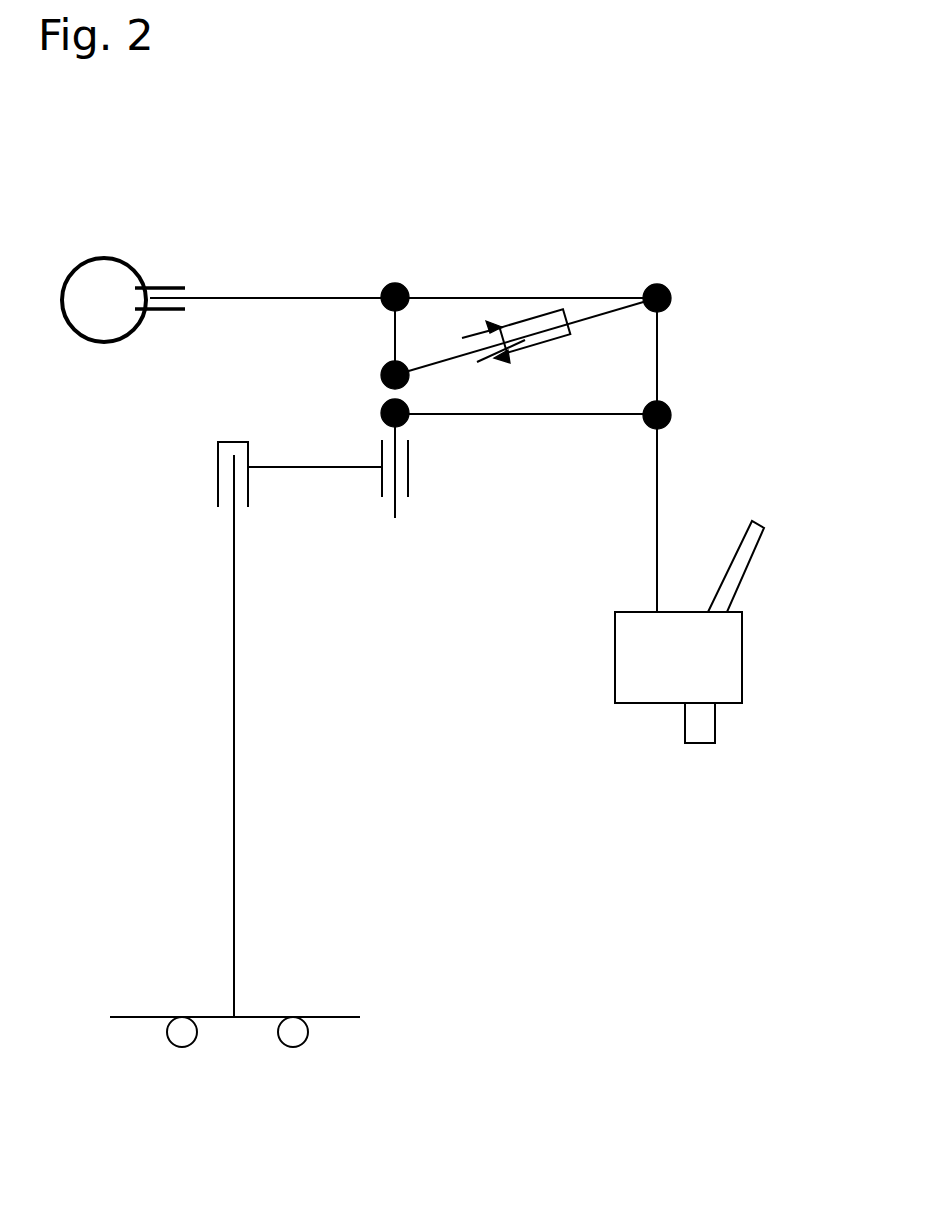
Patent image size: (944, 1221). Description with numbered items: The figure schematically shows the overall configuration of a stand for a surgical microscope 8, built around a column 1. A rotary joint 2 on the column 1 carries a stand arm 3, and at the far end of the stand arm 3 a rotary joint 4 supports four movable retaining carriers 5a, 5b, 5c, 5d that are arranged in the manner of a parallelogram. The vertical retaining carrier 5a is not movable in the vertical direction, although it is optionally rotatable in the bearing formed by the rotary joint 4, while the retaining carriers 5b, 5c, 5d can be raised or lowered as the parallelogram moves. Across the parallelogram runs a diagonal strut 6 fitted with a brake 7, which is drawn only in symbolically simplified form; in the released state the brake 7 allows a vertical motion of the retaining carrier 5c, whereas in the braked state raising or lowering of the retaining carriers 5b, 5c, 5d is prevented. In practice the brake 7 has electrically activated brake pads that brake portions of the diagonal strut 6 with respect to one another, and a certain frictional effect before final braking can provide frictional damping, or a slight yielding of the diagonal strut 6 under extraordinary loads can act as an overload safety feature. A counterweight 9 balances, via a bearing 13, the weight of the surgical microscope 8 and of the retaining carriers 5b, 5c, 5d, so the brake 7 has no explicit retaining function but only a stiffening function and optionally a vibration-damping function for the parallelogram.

The column 1 is at (235, 782).
The rotary joint 2 is at (218, 467).
The stand arm 3 is at (288, 467).
The rotary joint 4 is at (410, 467).
The retaining carrier 5a is at (395, 350).
The retaining carrier 5b is at (495, 297).
The retaining carrier 5c is at (658, 360).
The retaining carrier 5d is at (513, 415).
The diagonal strut 6 is at (600, 323).
The brake 7 is at (503, 327).
The surgical microscope 8 is at (725, 675).
The counterweight 9 is at (118, 285).
The bearing 13 is at (170, 287).